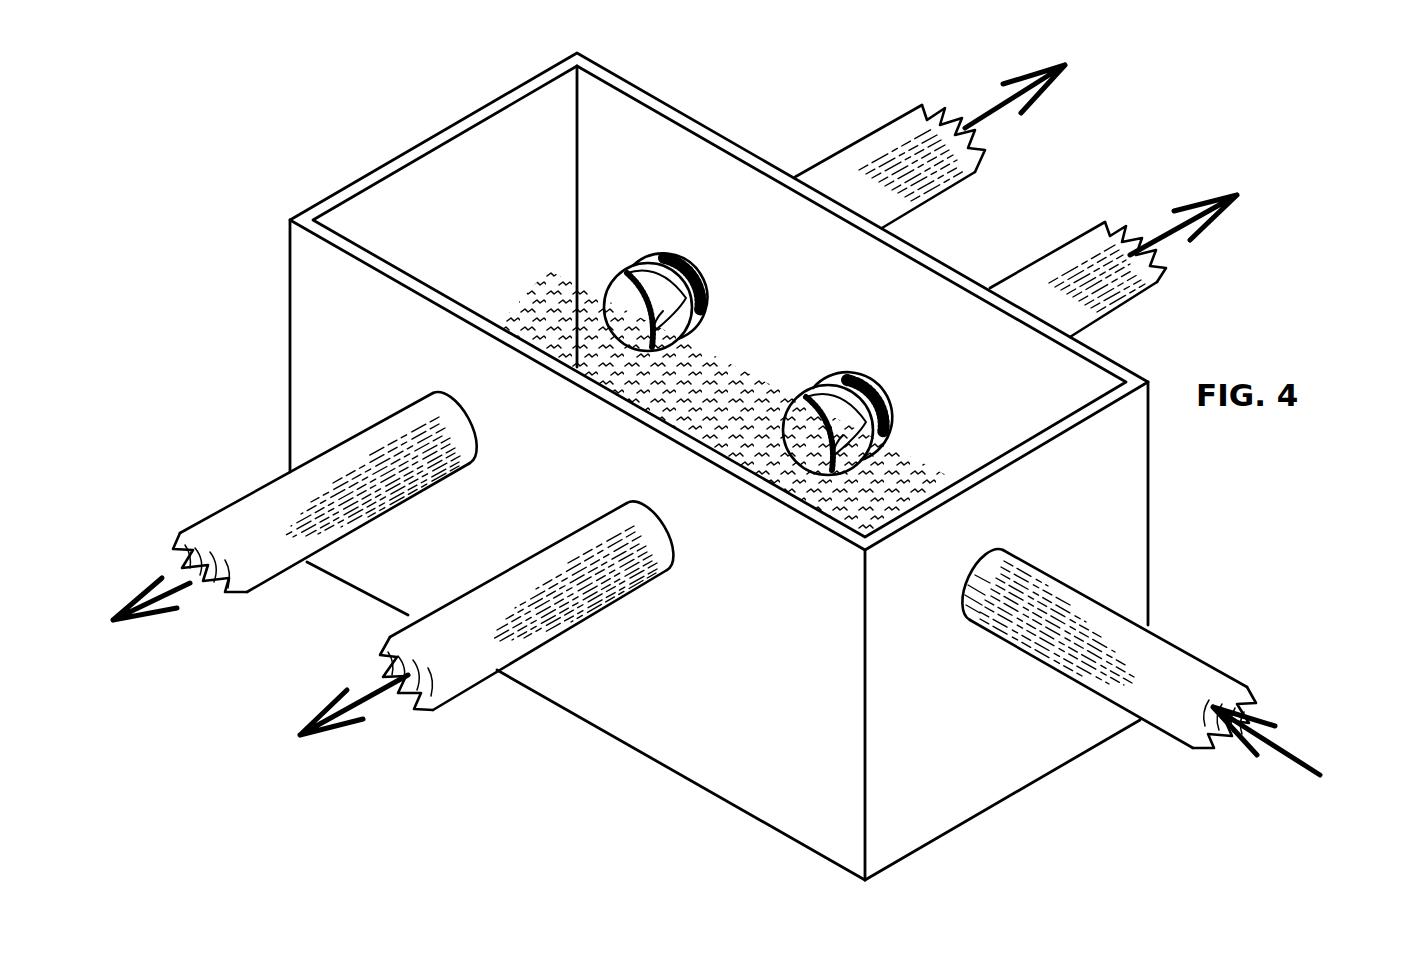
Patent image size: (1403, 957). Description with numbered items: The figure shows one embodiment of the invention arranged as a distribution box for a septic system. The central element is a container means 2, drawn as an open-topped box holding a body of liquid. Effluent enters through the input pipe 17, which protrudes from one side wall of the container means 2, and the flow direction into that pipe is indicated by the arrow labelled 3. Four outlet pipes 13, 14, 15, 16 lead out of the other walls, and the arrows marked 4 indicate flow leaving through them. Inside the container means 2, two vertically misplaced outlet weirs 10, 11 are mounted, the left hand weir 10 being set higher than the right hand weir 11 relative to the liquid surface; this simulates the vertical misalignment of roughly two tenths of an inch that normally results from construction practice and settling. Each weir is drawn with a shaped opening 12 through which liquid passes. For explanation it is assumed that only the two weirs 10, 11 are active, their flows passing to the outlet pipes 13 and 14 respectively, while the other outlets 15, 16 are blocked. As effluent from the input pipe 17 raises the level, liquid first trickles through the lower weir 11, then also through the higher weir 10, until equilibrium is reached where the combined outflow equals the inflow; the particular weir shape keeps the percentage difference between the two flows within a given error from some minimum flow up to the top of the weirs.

The container means 2 is at (768, 795).
The direction of insertion 3 is at (1280, 752).
The direction of withdrawal 4 is at (672, 404).
The left hand outlet weir 10 is at (700, 316).
The right hand outlet weir 11 is at (882, 426).
The slot 12 is at (643, 260).
The outlet pipe 13 is at (852, 176).
The outlet pipe 14 is at (1046, 286).
The outlet pipe 15 is at (280, 500).
The outlet pipe 16 is at (482, 606).
The input pipe 17 is at (1175, 668).